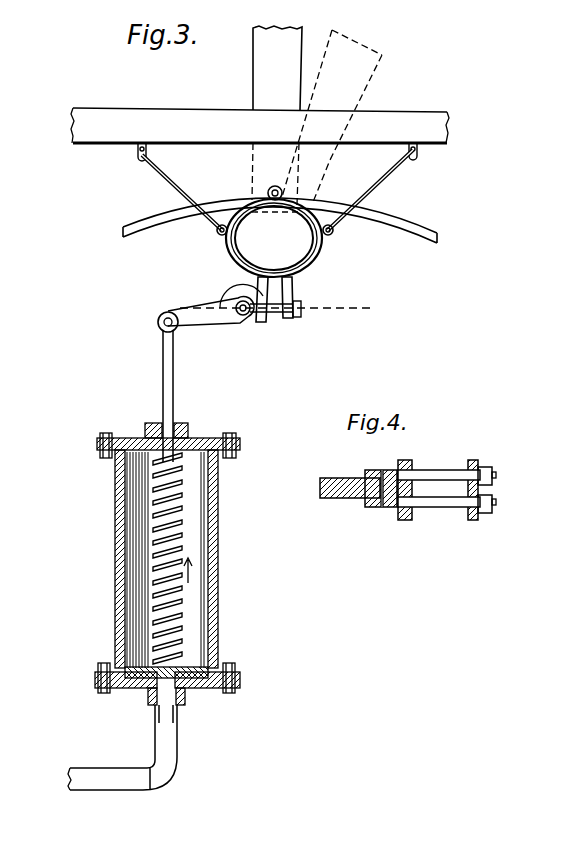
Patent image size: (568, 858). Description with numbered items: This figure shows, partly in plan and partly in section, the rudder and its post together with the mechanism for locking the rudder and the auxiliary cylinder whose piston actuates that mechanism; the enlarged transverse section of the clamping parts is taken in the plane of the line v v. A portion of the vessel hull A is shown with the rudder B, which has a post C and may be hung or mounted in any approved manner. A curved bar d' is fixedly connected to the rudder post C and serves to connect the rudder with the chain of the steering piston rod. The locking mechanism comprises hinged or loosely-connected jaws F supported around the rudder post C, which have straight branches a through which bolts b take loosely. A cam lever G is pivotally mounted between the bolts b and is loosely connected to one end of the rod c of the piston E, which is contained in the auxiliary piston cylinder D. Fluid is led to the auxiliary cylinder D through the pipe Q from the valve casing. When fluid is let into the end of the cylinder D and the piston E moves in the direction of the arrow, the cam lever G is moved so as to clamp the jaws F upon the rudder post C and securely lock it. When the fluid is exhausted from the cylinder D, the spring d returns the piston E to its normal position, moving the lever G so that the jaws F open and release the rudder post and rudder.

In FIG. 3, the vessel hull A is at (435, 148).
In FIG. 3, the rudder B is at (317, 115).
In FIG. 3, the rudder post C is at (274, 238).
In FIG. 3, the jaws F is at (312, 266).
In FIG. 3, the curved bar d' is at (280, 231).
In FIG. 3, the straight branches a is at (262, 287).
In FIG. 4, the straight branches a is at (480, 467).
In FIG. 3, the bolts b is at (288, 321).
In FIG. 4, the bolts b is at (442, 472).
In FIG. 3, the section line v is at (274, 305).
In FIG. 3, the cam lever G is at (197, 323).
In FIG. 4, the cam lever G is at (350, 493).
In FIG. 3, the rod c is at (162, 386).
In FIG. 3, the spring d is at (202, 558).
In FIG. 3, the auxiliary piston cylinder D is at (219, 531).
In FIG. 3, the piston E is at (195, 673).
In FIG. 3, the pipe Q is at (134, 780).